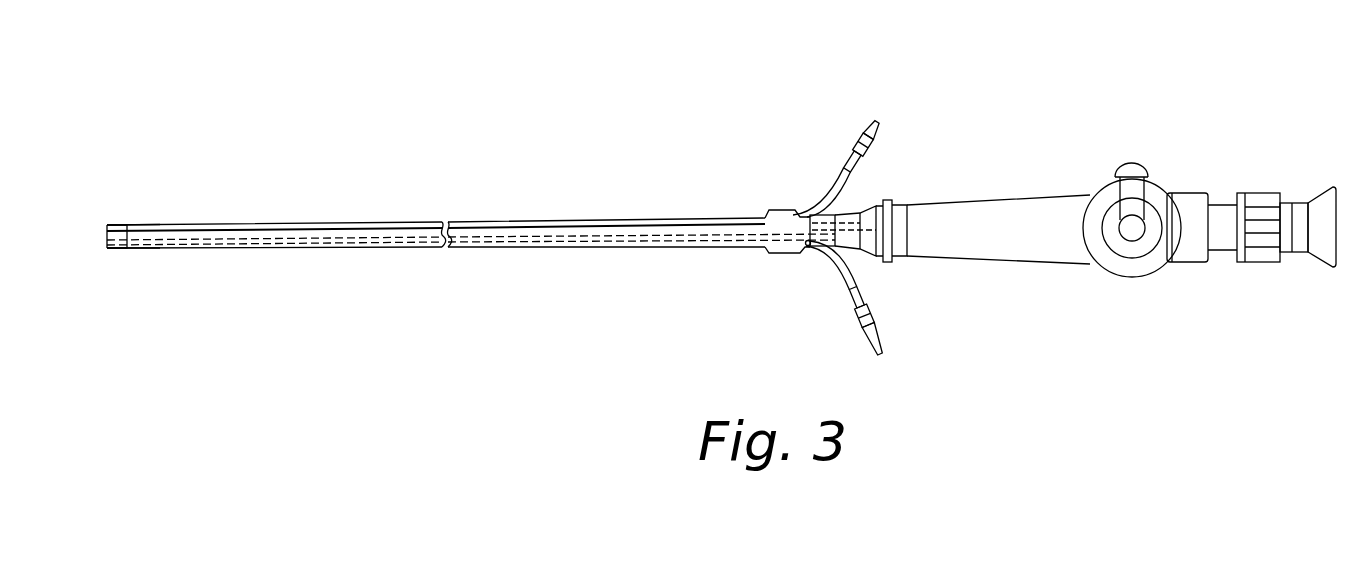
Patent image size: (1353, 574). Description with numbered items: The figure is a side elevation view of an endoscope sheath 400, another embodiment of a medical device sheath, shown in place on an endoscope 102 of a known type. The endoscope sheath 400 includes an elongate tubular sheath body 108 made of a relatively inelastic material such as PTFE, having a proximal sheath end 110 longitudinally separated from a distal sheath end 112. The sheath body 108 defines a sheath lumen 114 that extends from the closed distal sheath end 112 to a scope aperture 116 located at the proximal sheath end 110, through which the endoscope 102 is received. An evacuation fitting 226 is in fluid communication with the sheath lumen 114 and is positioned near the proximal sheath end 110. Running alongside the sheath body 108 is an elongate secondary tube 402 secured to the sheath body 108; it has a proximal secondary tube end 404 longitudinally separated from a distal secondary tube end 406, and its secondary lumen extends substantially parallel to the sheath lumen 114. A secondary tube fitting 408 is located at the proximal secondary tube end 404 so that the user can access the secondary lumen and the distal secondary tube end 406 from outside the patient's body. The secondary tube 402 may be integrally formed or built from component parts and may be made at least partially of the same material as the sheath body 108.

The endoscope 102 is at (1035, 173).
The sheath body 108 is at (677, 219).
The proximal sheath end 110 is at (901, 174).
The distal sheath end 112 is at (130, 207).
The sheath lumen 114 is at (612, 241).
The scope aperture 116 is at (901, 212).
The evacuation fitting 226 is at (906, 361).
The endoscope sheath 400 is at (556, 161).
The secondary tube 402 is at (299, 223).
The proximal secondary tube end 404 is at (892, 104).
The distal secondary tube end 406 is at (104, 216).
The secondary tube fitting 408 is at (853, 147).